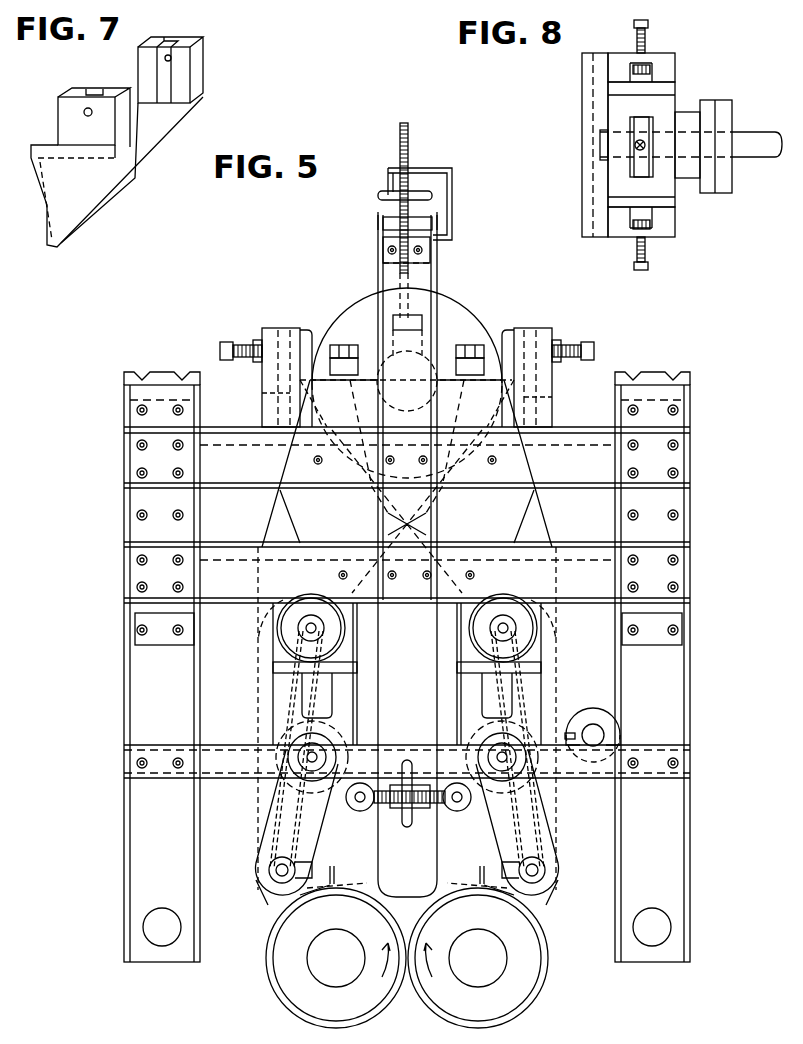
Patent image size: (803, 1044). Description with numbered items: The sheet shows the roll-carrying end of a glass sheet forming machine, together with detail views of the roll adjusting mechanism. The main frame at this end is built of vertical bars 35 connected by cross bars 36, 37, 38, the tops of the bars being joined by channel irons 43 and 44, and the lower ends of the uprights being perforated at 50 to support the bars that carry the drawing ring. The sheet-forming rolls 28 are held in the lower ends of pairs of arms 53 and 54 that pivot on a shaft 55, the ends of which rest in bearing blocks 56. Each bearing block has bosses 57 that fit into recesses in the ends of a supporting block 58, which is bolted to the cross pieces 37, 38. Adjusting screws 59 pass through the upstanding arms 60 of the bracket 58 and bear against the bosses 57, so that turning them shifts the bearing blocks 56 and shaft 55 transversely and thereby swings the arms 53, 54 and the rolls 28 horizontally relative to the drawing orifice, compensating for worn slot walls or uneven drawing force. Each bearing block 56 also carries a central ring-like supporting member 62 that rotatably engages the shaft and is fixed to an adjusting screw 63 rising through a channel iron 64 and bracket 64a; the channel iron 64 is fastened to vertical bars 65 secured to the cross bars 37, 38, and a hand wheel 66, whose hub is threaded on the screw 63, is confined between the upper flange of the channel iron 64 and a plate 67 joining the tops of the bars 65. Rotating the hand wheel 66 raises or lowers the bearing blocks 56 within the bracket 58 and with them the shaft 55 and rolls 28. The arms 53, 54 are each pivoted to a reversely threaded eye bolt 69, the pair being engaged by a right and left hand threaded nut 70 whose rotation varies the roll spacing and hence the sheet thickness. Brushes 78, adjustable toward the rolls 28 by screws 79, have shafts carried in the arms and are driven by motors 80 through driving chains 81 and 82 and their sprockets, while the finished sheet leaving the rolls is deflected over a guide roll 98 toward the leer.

In FIG. 5, the sheet-forming rolls 28 is at (386, 1010).
In FIG. 5, the vertical bars 35 is at (143, 683).
In FIG. 5, the cross bar 36 is at (224, 758).
In FIG. 5, the cross bar 37 is at (672, 572).
In FIG. 5, the cross bar 38 is at (672, 456).
In FIG. 5, the channel iron 43 is at (157, 384).
In FIG. 5, the channel iron 44 is at (648, 384).
In FIG. 5, the perforations 50 is at (160, 940).
In FIG. 8, the roll-supporting arm 53 is at (710, 100).
In FIG. 5, the roll-supporting arm 53 is at (557, 645).
In FIG. 8, the roll-supporting arm 54 is at (725, 176).
In FIG. 5, the roll-supporting arm 54 is at (266, 652).
In FIG. 8, the shaft 55 is at (755, 141).
In FIG. 5, the shaft 55 is at (446, 322).
In FIG. 8, the bearing block 56 is at (672, 86).
In FIG. 5, the bearing block 56 is at (345, 344).
In FIG. 8, the boss 57 is at (645, 72).
In FIG. 5, the boss 57 is at (262, 393).
In FIG. 7, the supporting block 58 is at (117, 180).
In FIG. 8, the supporting block 58 is at (582, 98).
In FIG. 5, the supporting block 58 is at (543, 458).
In FIG. 8, the adjusting screw 59 is at (646, 42).
In FIG. 5, the adjusting screw 59 is at (236, 344).
In FIG. 7, the upstanding arm 60 is at (70, 104).
In FIG. 8, the upstanding arm 60 is at (620, 56).
In FIG. 5, the upstanding arm 60 is at (268, 328).
In FIG. 8, the ring-like supporting member 62 is at (636, 170).
In FIG. 5, the ring-like supporting member 62 is at (407, 337).
In FIG. 8, the adjusting screw 63 is at (634, 146).
In FIG. 5, the adjusting screw 63 is at (402, 150).
In FIG. 5, the channel iron 64 is at (452, 222).
In FIG. 5, the bracket 64a is at (452, 198).
In FIG. 5, the vertical bars 65 is at (377, 273).
In FIG. 5, the hand wheel 66 is at (378, 193).
In FIG. 5, the plate 67 is at (382, 224).
In FIG. 5, the eye bolt 69 is at (437, 785).
In FIG. 5, the right and left hand threaded nut 70 is at (407, 823).
In FIG. 5, the brush 78 is at (273, 912).
In FIG. 5, the adjusting screw 79 is at (343, 864).
In FIG. 5, the motor 80 is at (292, 618).
In FIG. 5, the driving chain 81 is at (283, 700).
In FIG. 5, the driving chain 82 is at (278, 805).
In FIG. 5, the guide roll 98 is at (600, 702).